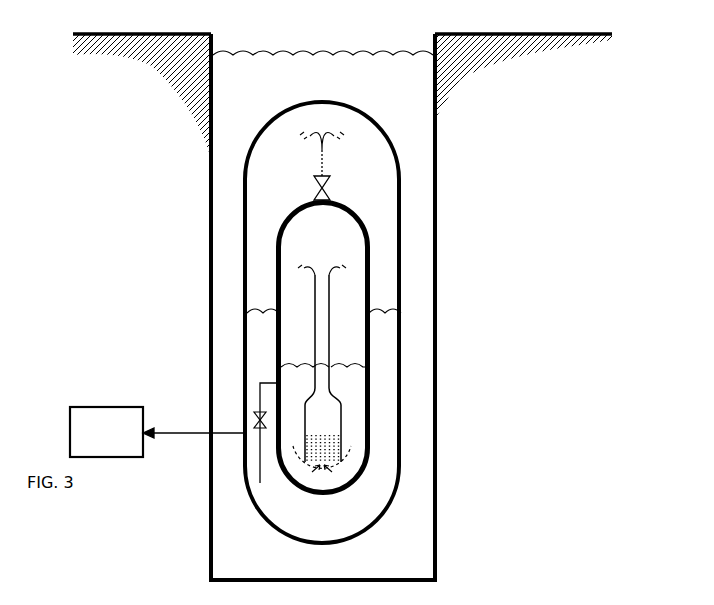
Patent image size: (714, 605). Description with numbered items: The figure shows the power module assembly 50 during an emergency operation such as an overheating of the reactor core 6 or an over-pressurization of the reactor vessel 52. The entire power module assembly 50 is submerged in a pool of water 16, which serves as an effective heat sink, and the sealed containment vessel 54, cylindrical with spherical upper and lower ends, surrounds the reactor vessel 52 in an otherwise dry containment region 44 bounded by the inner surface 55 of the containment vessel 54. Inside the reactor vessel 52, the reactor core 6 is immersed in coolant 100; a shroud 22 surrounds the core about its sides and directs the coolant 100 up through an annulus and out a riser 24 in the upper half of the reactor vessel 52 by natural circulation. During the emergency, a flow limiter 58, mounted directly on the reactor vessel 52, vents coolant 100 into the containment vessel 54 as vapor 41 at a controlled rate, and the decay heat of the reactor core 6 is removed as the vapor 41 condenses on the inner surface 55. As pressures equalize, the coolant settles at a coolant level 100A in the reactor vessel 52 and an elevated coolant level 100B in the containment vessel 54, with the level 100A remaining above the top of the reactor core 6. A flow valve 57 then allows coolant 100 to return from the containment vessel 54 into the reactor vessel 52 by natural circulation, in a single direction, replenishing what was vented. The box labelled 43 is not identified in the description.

The reactor core 6 is at (345, 446).
The pool of water 16 is at (255, 104).
The shroud 22 is at (345, 398).
The riser 24 is at (338, 291).
The vapor 41 is at (305, 227).
The controller / heat sink unit 43 is at (118, 442).
The containment region 44 is at (290, 174).
The power module assembly 50 is at (240, 197).
The reactor vessel 52 is at (375, 237).
The containment vessel 54 is at (403, 168).
The inner surface 55 is at (392, 203).
The flow valve 57 is at (250, 418).
The flow limiter 58 is at (322, 181).
The coolant 100 is at (300, 380).
The coolant level in the reactor vessel 100A is at (343, 355).
The coolant level in the containment vessel 100B is at (262, 300).